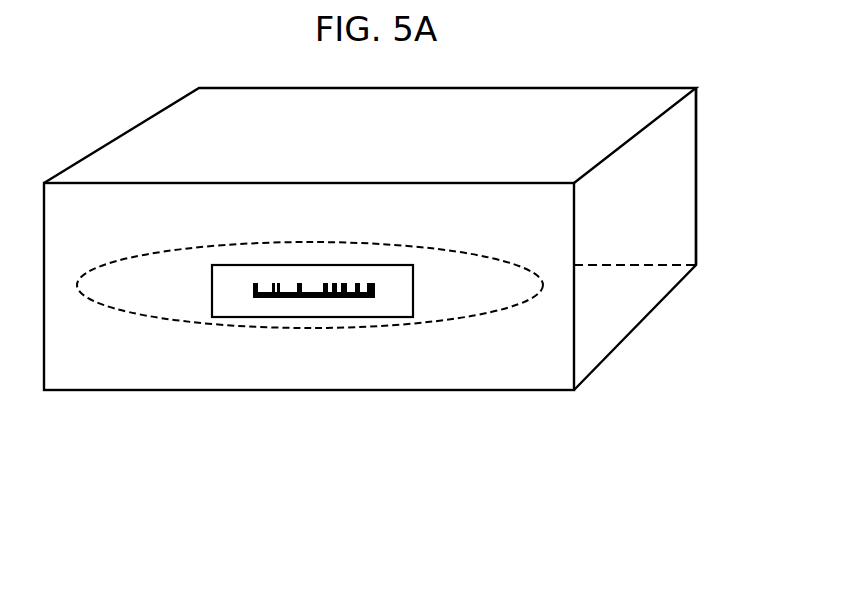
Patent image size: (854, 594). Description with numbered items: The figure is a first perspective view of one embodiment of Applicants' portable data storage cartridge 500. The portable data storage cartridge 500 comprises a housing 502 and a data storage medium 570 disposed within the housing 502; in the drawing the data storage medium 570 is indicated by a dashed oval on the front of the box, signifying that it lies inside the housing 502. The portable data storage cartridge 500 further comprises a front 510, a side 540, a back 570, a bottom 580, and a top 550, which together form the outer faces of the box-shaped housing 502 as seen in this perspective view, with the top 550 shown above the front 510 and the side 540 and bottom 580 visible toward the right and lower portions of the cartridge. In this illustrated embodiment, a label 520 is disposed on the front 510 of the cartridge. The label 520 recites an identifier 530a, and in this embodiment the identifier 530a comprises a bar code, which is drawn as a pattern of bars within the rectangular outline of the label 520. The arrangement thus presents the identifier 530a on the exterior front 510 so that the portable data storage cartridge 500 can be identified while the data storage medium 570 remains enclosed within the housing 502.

The portable data storage cartridge 500 is at (313, 450).
The housing 502 is at (502, 390).
The front 510 is at (290, 221).
The label 520 is at (404, 318).
The identifier 530a is at (292, 298).
The side 540 is at (680, 233).
The top 550 is at (340, 138).
The data storage medium 570 is at (617, 217).
The bottom 580 is at (595, 311).